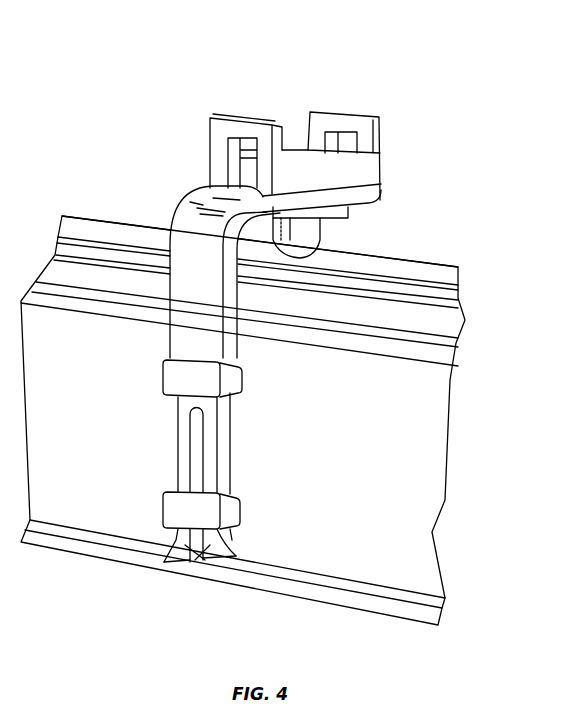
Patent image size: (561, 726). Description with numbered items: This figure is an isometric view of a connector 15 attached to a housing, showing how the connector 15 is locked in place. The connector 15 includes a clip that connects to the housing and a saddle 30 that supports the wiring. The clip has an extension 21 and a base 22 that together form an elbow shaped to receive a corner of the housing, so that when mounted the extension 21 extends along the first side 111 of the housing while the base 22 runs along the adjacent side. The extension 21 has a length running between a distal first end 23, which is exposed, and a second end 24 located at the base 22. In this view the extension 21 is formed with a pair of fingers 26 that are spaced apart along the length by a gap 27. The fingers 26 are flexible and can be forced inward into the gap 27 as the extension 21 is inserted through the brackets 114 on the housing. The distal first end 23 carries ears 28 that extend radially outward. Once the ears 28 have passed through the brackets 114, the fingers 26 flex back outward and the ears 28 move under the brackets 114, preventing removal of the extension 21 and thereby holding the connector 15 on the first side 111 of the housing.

The connector 15 is at (176, 100).
The extension 21 is at (200, 273).
The base 22 is at (373, 194).
The first end 23 is at (208, 552).
The second end 24 is at (190, 188).
The fingers 26 is at (183, 442).
The gap 27 is at (178, 484).
The ears 28 is at (183, 543).
The saddle 30 is at (335, 172).
The first side 111 is at (418, 451).
The brackets 114 is at (200, 383).